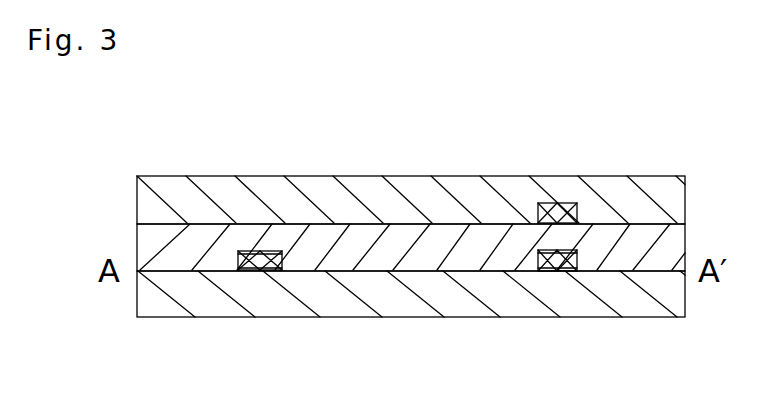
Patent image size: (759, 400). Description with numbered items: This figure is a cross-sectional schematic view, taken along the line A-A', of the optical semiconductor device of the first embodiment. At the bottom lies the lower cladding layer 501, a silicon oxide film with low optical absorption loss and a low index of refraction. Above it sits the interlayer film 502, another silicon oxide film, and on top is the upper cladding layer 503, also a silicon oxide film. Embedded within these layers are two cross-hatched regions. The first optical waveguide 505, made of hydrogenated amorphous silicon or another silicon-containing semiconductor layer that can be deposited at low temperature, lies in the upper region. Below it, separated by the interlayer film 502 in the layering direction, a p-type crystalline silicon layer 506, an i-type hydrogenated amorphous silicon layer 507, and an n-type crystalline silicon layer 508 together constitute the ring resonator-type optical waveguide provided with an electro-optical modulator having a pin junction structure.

The lower cladding layer 501 is at (145, 303).
The interlayer film 502 is at (137, 228).
The upper cladding layer 503 is at (215, 177).
The first optical waveguide 505 is at (558, 203).
The i-type hydrogenated amorphous silicon layer 507 is at (247, 252).
The n-type crystalline silicon layer 508 is at (271, 252).
The p-type crystalline silicon layer 506 is at (282, 270).